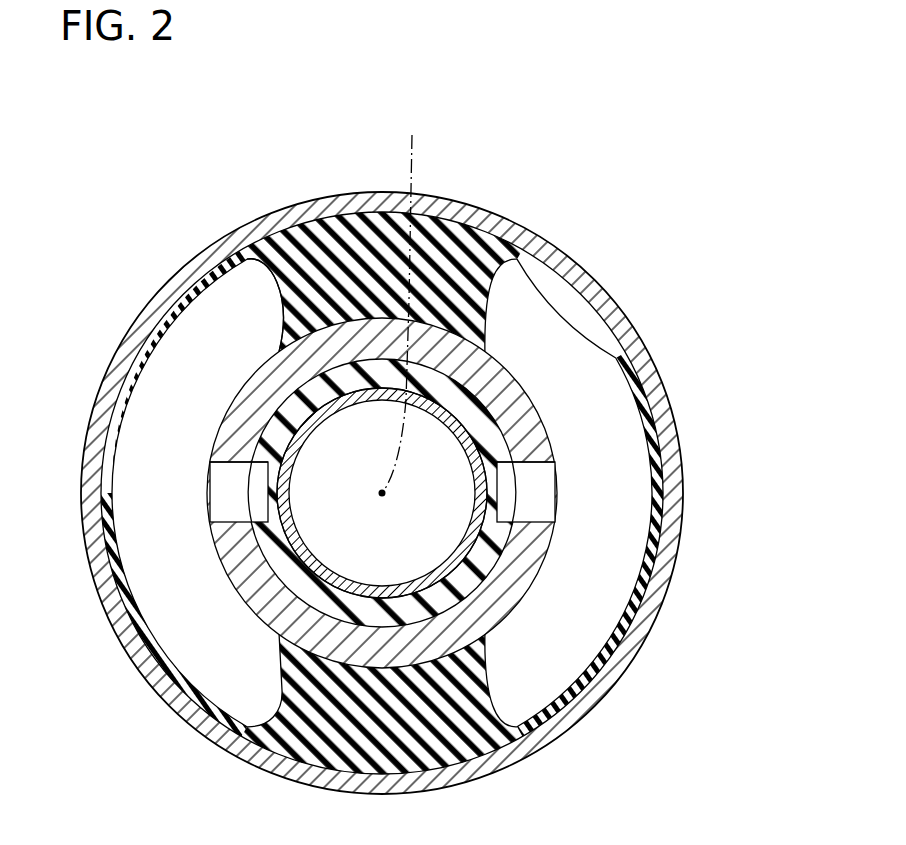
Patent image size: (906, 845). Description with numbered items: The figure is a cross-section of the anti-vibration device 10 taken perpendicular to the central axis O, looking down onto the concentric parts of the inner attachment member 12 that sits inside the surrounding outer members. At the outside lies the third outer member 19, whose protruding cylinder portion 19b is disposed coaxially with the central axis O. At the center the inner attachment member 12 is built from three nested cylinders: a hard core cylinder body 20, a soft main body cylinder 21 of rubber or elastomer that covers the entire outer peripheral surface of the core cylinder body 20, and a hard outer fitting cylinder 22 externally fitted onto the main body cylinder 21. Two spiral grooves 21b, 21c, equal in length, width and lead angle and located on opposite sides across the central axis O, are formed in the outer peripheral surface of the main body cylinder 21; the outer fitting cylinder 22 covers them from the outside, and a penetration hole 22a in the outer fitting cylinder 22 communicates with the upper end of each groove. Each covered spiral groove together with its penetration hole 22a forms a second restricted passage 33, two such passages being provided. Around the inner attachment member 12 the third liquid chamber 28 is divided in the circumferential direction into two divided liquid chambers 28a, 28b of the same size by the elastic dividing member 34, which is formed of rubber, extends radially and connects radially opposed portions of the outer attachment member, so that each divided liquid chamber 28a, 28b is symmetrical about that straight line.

The anti-vibration device 10 is at (648, 113).
The inner attachment member 12 is at (511, 506).
The third outer member 19 is at (405, 493).
The protruding cylinder portion 19b is at (607, 287).
The core cylinder body 20 is at (482, 530).
The main body cylinder 21 is at (497, 555).
The spiral groove 21b is at (510, 488).
The spiral groove 21c is at (258, 505).
The outer fitting cylinder 22 is at (505, 600).
The penetration hole 22a is at (385, 459).
The third liquid chamber 28 is at (172, 322).
The divided liquid chamber 28a is at (656, 459).
The divided liquid chamber 28b is at (163, 652).
The second restricted passage 33 is at (206, 470).
The elastic dividing member 34 is at (260, 302).
The central axis O is at (403, 300).